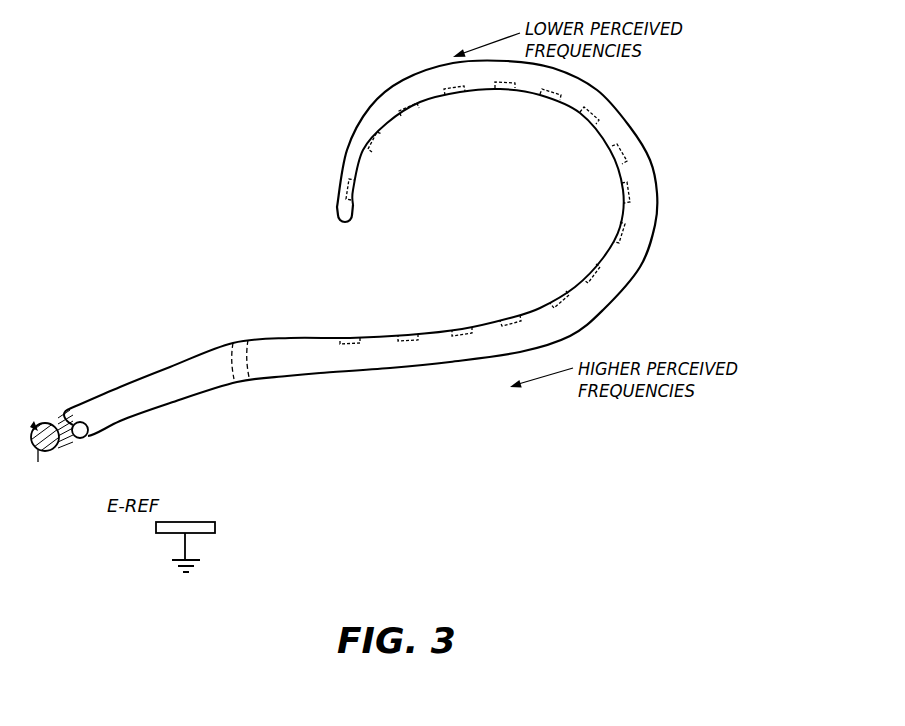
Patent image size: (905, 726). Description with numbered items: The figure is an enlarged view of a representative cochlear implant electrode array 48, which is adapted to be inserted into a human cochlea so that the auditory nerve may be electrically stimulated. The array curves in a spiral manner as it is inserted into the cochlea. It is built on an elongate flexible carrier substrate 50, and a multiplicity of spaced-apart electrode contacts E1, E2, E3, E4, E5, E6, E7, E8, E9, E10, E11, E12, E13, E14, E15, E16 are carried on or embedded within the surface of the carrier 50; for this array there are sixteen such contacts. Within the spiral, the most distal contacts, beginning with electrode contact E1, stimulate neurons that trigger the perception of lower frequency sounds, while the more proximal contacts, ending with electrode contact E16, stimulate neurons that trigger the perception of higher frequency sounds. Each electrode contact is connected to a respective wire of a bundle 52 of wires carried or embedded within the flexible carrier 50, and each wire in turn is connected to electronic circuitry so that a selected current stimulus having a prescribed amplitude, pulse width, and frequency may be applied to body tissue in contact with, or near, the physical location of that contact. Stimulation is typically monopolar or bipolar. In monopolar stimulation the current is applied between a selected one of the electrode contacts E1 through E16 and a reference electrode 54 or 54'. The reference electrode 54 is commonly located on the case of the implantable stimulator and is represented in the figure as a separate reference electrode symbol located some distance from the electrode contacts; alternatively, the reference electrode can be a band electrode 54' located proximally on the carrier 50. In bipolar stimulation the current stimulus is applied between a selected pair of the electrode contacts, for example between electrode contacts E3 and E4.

The cochlear implant electrode array 48 is at (678, 99).
The flexible carrier substrate 50 is at (290, 338).
The bundle of wires 52 is at (58, 452).
The reference electrode 54 is at (187, 522).
The band electrode 54' is at (266, 392).
The electrode contact E1 is at (367, 189).
The electrode contact E2 is at (385, 150).
The electrode contact E3 is at (415, 121).
The electrode contact E4 is at (456, 103).
The electrode contact E5 is at (503, 97).
The electrode contact E6 is at (543, 107).
The electrode contact E7 is at (580, 125).
The electrode contact E8 is at (609, 160).
The electrode contact E9 is at (614, 194).
The electrode contact E10 is at (604, 230).
The electrode contact E11 is at (581, 266).
The electrode contact E12 is at (548, 293).
The electrode contact E13 is at (505, 309).
The electrode contact E14 is at (458, 319).
The electrode contact E15 is at (405, 324).
The electrode contact E16 is at (350, 328).